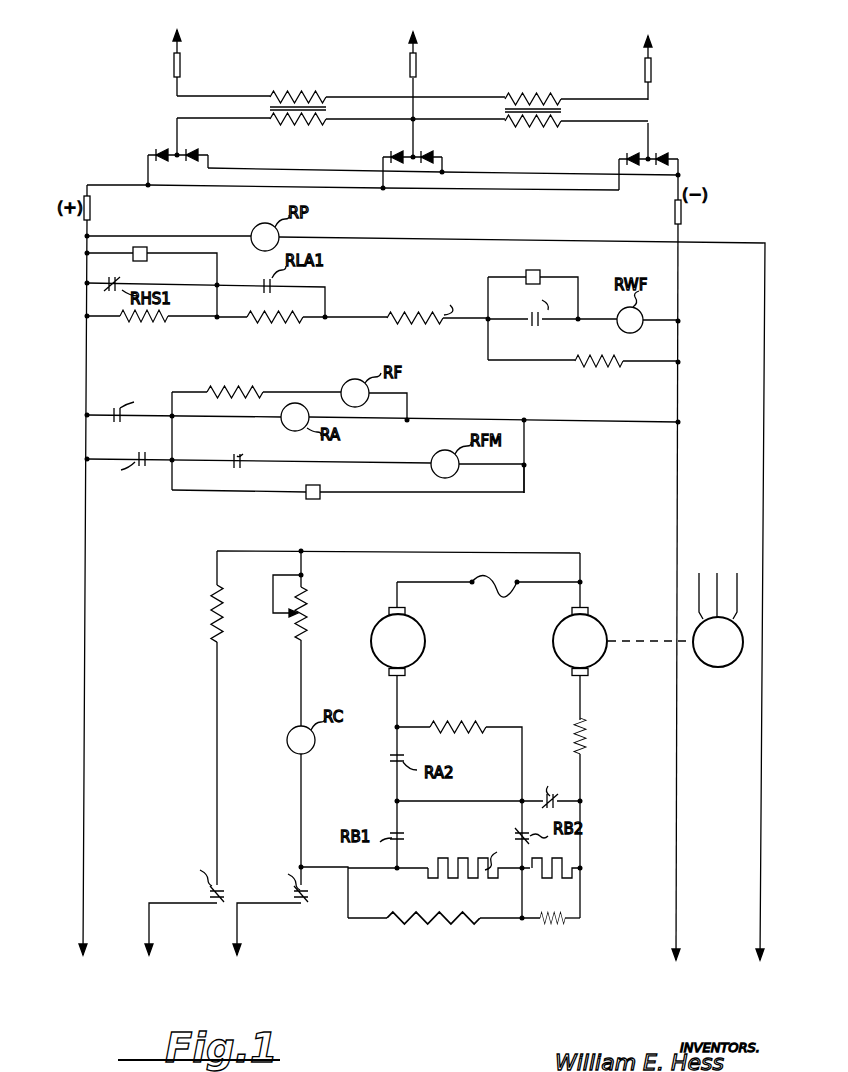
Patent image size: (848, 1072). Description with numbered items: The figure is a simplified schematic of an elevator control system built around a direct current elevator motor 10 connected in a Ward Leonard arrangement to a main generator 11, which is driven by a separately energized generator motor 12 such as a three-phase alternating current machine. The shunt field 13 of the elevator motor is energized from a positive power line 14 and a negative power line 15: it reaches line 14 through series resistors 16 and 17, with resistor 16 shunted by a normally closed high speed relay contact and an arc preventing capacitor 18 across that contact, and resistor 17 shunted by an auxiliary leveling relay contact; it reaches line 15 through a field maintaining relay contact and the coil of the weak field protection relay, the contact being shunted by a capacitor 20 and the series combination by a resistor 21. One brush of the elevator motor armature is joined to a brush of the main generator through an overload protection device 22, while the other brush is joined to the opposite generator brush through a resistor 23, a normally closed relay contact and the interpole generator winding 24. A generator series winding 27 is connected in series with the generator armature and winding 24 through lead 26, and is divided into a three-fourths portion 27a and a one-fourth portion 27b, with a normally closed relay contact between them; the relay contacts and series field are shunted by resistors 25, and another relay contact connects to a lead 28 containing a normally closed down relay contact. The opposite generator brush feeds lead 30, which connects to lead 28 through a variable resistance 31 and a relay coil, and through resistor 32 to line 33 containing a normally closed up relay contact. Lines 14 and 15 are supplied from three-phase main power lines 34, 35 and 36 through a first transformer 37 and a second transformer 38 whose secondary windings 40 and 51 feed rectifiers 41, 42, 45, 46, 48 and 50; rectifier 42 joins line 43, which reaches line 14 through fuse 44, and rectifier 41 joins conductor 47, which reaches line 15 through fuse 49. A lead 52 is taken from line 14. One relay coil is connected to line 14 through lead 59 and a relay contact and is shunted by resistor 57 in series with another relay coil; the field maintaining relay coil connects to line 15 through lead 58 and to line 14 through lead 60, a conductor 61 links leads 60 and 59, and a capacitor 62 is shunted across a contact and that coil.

The elevator motor 10 is at (418, 620).
The main generator 11 is at (600, 620).
The generator motor 12 is at (738, 623).
The shunt field 13 is at (435, 320).
The power line 14 is at (86, 358).
The power line 15 is at (678, 300).
The resistor 16 is at (146, 322).
The resistor 17 is at (272, 322).
The arc preventing capacitor 18 is at (148, 258).
The capacitor 20 is at (540, 270).
The resistor 21 is at (598, 368).
The overload protection device 22 is at (497, 582).
The resistor 23 is at (465, 727).
The interpole generator winding 24 is at (585, 730).
The resistors 25 is at (458, 882).
The lead 26 is at (580, 818).
The generator series winding 27 is at (476, 952).
The series field winding portion 27a is at (402, 922).
The series field winding portion 27b is at (556, 924).
The lead 28 is at (301, 815).
The lead 30 is at (405, 552).
The variable resistance 31 is at (306, 610).
The resistor 32 is at (214, 622).
The line 33 is at (217, 697).
The main power line 34 is at (180, 44).
The main power line 35 is at (417, 44).
The main power line 36 is at (649, 46).
The first transformer 37 is at (302, 96).
The second transformer 38 is at (537, 96).
The secondary winding 40 is at (300, 125).
The rectifier 41 is at (188, 153).
The rectifier 42 is at (162, 155).
The line 43 is at (213, 183).
The fuse 44 is at (92, 208).
The rectifier 45 is at (400, 154).
The rectifier 46 is at (634, 156).
The conductor 47 is at (533, 176).
The rectifier 48 is at (426, 154).
The fuse 49 is at (683, 214).
The rectifier 50 is at (662, 156).
The secondary winding 51 is at (538, 126).
The lead 52 is at (400, 238).
The resistor 57 is at (240, 388).
The lead 58 is at (528, 448).
The lead 59 is at (460, 418).
The lead 60 is at (284, 472).
The conductor 61 is at (172, 432).
The capacitor 62 is at (320, 498).